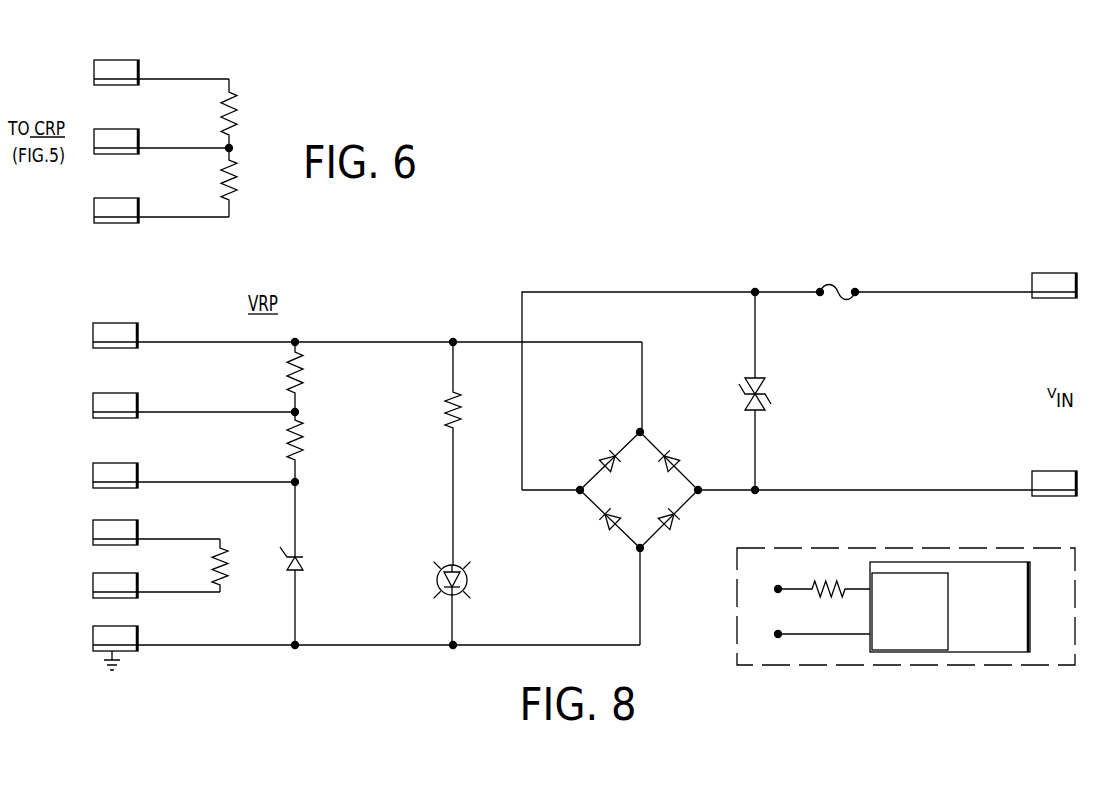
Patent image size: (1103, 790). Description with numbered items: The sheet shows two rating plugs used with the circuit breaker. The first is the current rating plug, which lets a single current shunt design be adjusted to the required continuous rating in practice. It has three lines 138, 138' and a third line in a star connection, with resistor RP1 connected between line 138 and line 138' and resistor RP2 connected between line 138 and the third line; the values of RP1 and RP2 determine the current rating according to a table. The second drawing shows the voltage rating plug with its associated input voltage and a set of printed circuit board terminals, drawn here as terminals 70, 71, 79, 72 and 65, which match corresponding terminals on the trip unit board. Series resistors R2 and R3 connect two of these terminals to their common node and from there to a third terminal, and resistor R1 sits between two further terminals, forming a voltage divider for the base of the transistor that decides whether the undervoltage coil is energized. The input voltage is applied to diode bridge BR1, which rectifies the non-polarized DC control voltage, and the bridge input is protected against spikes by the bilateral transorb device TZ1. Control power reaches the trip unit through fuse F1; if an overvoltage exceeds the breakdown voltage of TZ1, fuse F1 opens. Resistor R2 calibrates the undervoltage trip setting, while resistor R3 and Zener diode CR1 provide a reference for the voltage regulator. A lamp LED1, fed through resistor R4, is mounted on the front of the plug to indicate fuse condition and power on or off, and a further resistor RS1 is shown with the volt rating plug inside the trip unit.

In FIG. 6, the line 138' is at (161, 63).
In FIG. 6, the line 138 is at (163, 133).
In FIG. 6, the resistor RP1 is at (238, 116).
In FIG. 6, the resistor RP2 is at (238, 180).
In FIG. 8, the terminal 70 is at (168, 342).
In FIG. 8, the terminal 71 is at (160, 412).
In FIG. 8, the terminal 79 is at (158, 482).
In FIG. 8, the terminal 72 is at (157, 539).
In FIG. 8, the terminal 65 is at (157, 592).
In FIG. 8, the resistor R1 is at (230, 569).
In FIG. 8, the resistor R2 is at (305, 375).
In FIG. 8, the resistor R3 is at (305, 442).
In FIG. 8, the resistor R4 is at (462, 408).
In FIG. 8, the Zener diode CR1 is at (304, 569).
In FIG. 8, the lamp LED1 is at (468, 580).
In FIG. 8, the diode bridge BR1 is at (628, 565).
In FIG. 8, the bilateral transorb device TZ1 is at (770, 394).
In FIG. 8, the fuse F1 is at (838, 288).
In FIG. 8, the volt rating plug resistor RS1 is at (822, 578).